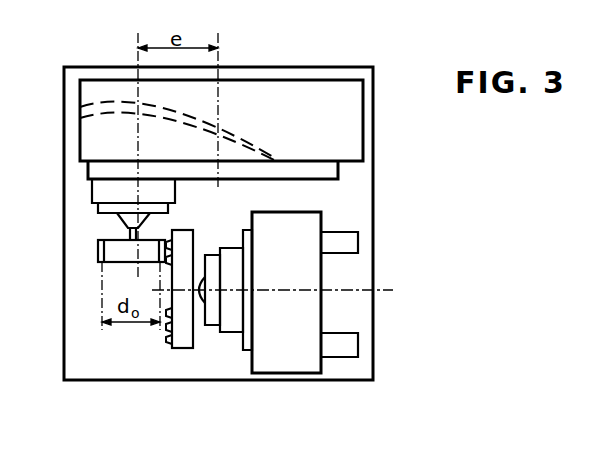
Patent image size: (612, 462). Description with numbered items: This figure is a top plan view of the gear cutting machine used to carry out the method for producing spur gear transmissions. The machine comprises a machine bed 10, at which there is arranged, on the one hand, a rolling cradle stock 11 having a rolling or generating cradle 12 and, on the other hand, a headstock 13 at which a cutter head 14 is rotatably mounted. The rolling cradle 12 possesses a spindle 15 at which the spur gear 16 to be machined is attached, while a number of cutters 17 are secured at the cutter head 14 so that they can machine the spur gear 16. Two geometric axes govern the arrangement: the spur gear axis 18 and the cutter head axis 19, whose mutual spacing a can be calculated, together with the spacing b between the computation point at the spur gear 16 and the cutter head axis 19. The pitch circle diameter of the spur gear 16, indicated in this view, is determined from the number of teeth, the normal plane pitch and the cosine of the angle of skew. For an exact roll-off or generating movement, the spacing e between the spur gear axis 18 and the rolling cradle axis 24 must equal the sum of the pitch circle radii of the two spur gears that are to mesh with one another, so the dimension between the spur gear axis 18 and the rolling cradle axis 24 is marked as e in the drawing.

The machine bed 10 is at (377, 86).
The rolling cradle stock 11 is at (353, 135).
The rolling cradle 12 is at (340, 172).
The headstock 13 is at (278, 365).
The cutter head 14 is at (178, 352).
The spindle 15 is at (128, 232).
The spur gear 16 is at (98, 250).
The cutters 17 is at (168, 338).
The spur gear axis 18 is at (138, 41).
The cutter head axis 19 is at (383, 292).
The rolling cradle axis 24 is at (218, 41).